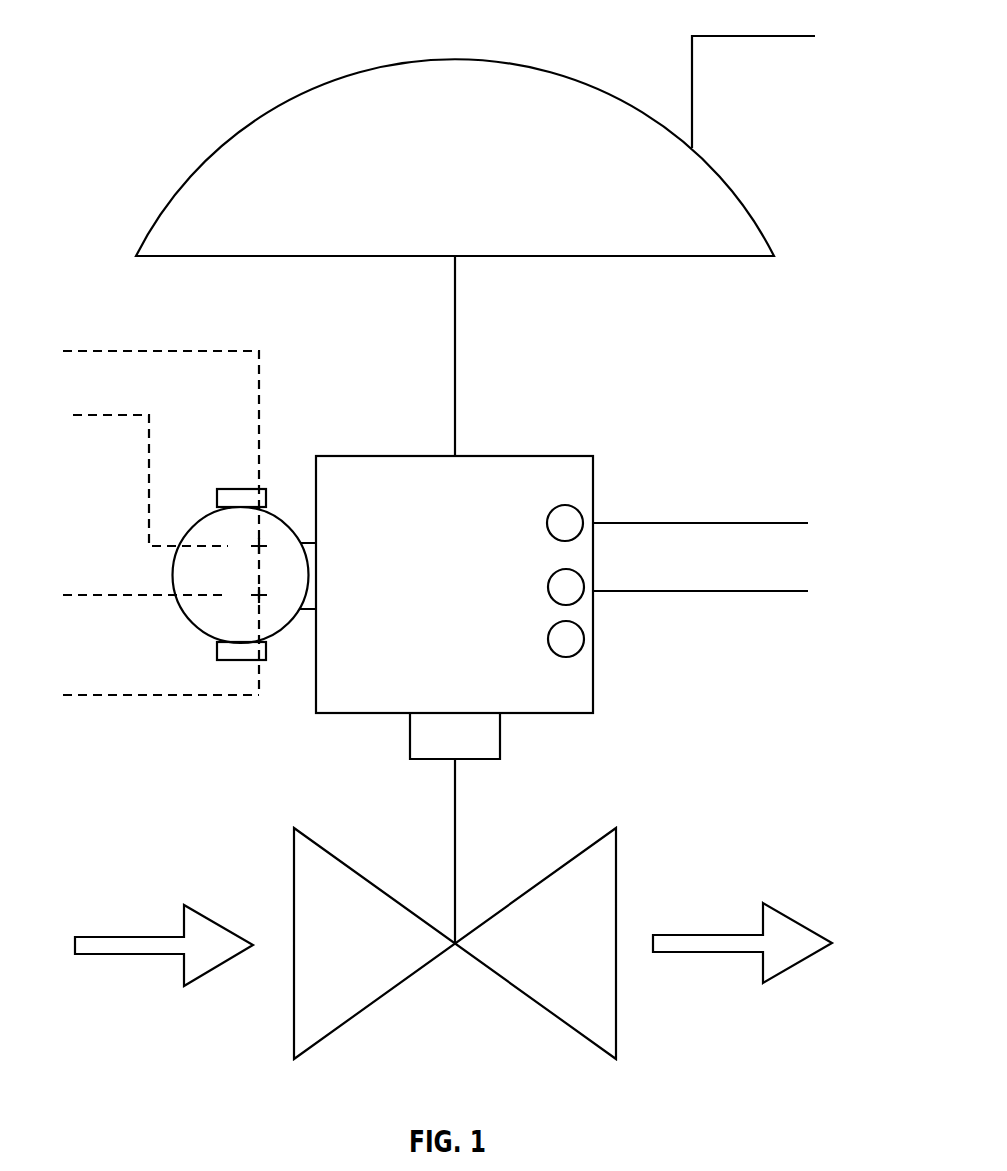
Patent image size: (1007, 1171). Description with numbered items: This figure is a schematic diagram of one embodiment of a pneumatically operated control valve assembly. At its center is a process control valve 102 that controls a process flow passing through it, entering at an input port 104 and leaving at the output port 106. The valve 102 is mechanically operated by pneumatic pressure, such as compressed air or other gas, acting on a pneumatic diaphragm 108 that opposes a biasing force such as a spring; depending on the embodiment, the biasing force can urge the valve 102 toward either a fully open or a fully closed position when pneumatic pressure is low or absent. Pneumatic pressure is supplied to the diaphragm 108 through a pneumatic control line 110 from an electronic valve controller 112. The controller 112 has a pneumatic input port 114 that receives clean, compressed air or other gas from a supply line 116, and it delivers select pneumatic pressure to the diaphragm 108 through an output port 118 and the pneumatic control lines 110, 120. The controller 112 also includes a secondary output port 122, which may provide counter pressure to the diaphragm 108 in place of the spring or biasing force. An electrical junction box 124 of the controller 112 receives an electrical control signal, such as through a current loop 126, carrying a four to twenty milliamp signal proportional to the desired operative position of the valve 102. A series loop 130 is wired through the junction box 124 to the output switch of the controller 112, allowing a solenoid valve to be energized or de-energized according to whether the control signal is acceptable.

The process control valve 102 is at (306, 882).
The input port 104 is at (266, 1018).
The outlet flow 106 is at (636, 969).
The pneumatic diaphragm 108 is at (306, 107).
The pneumatic control line 110 is at (753, 37).
The electronic valve controller 112 is at (515, 463).
The pneumatic input port 114 is at (548, 590).
The supply line 116 is at (748, 592).
The output port 118 is at (547, 523).
The pneumatic control line 120 is at (742, 522).
The secondary output port 122 is at (548, 640).
The electrical junction box 124 is at (110, 350).
The current loop 126 is at (172, 575).
The series loop 130 is at (118, 596).